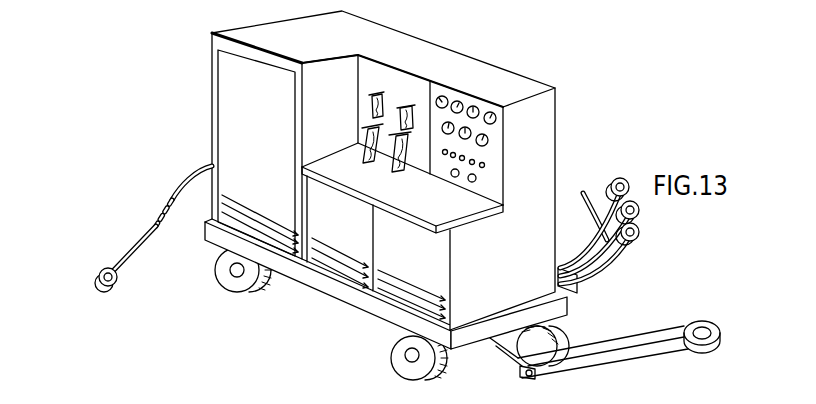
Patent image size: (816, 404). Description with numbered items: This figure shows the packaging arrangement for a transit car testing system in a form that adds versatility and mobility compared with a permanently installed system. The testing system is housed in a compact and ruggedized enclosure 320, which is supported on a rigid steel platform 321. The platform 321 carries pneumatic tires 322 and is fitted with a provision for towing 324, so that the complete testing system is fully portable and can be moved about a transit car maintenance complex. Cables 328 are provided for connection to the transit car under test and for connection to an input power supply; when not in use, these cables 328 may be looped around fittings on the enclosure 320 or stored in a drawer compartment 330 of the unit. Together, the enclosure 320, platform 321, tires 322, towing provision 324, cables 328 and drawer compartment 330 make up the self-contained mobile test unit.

The enclosure 320 is at (433, 46).
The platform 321 is at (353, 305).
The pneumatic tires 322 is at (243, 294).
The provision for towing 324 is at (686, 351).
The cables 328 is at (112, 268).
The drawer compartment 330 is at (580, 283).